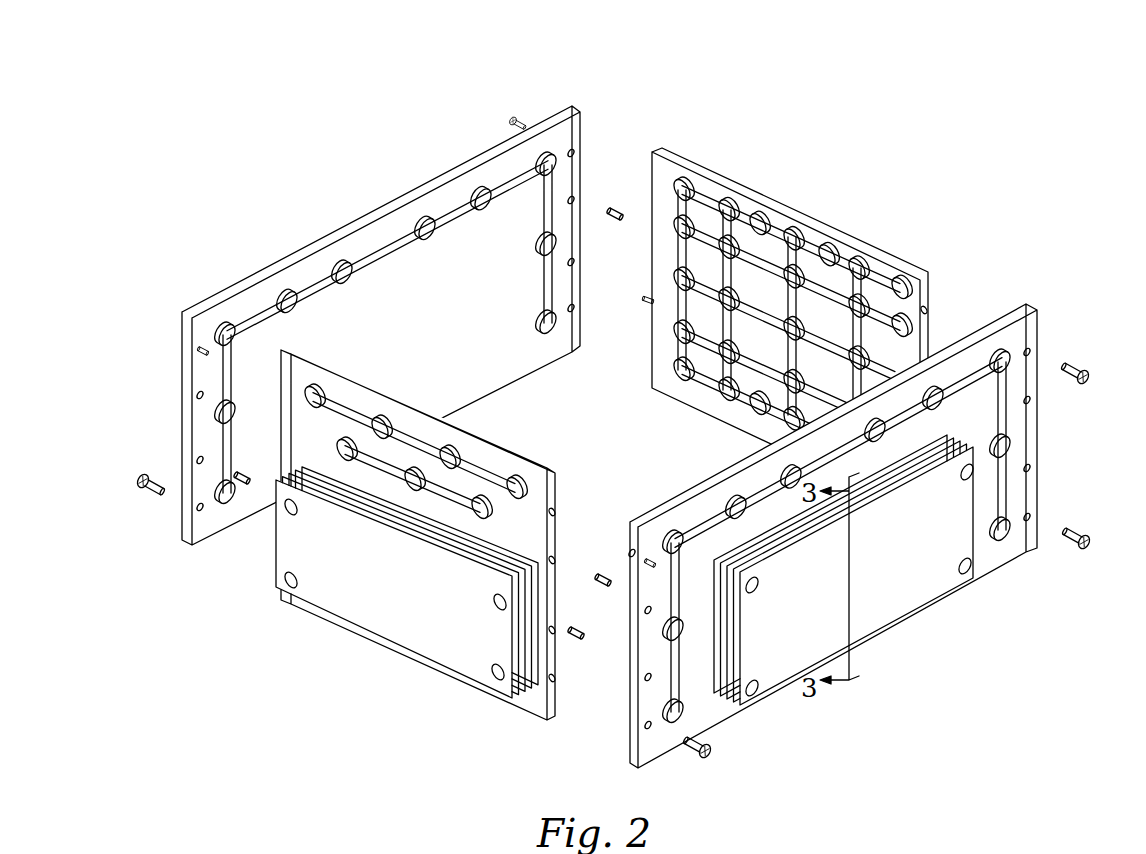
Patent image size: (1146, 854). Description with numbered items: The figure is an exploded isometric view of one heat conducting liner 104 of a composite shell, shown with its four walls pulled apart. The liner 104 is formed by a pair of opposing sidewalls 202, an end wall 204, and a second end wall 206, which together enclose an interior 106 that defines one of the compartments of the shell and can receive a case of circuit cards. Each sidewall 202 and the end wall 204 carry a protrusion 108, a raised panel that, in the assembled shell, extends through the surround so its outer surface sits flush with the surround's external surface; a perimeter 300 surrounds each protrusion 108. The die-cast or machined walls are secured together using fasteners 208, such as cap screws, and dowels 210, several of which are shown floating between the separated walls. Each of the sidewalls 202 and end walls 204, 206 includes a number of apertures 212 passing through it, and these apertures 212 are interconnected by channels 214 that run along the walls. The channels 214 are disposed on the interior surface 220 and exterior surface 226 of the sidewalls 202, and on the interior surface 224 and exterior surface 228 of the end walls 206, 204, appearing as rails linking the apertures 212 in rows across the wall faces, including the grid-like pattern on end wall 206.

The liner 104 is at (786, 89).
The interior 106 is at (680, 417).
The protrusion 108 is at (681, 521).
The sidewall 202 is at (363, 220).
The end wall 204 is at (533, 468).
The end wall 206 is at (766, 202).
The fastener 208 is at (509, 118).
The dowel 210 is at (617, 203).
The aperture 212 is at (553, 334).
The channel 214 is at (256, 322).
The interior surface 220 is at (448, 263).
The interior surface 224 is at (833, 323).
The exterior surface 226 is at (817, 443).
The exterior surface 228 is at (405, 485).
The perimeter 300 is at (517, 553).